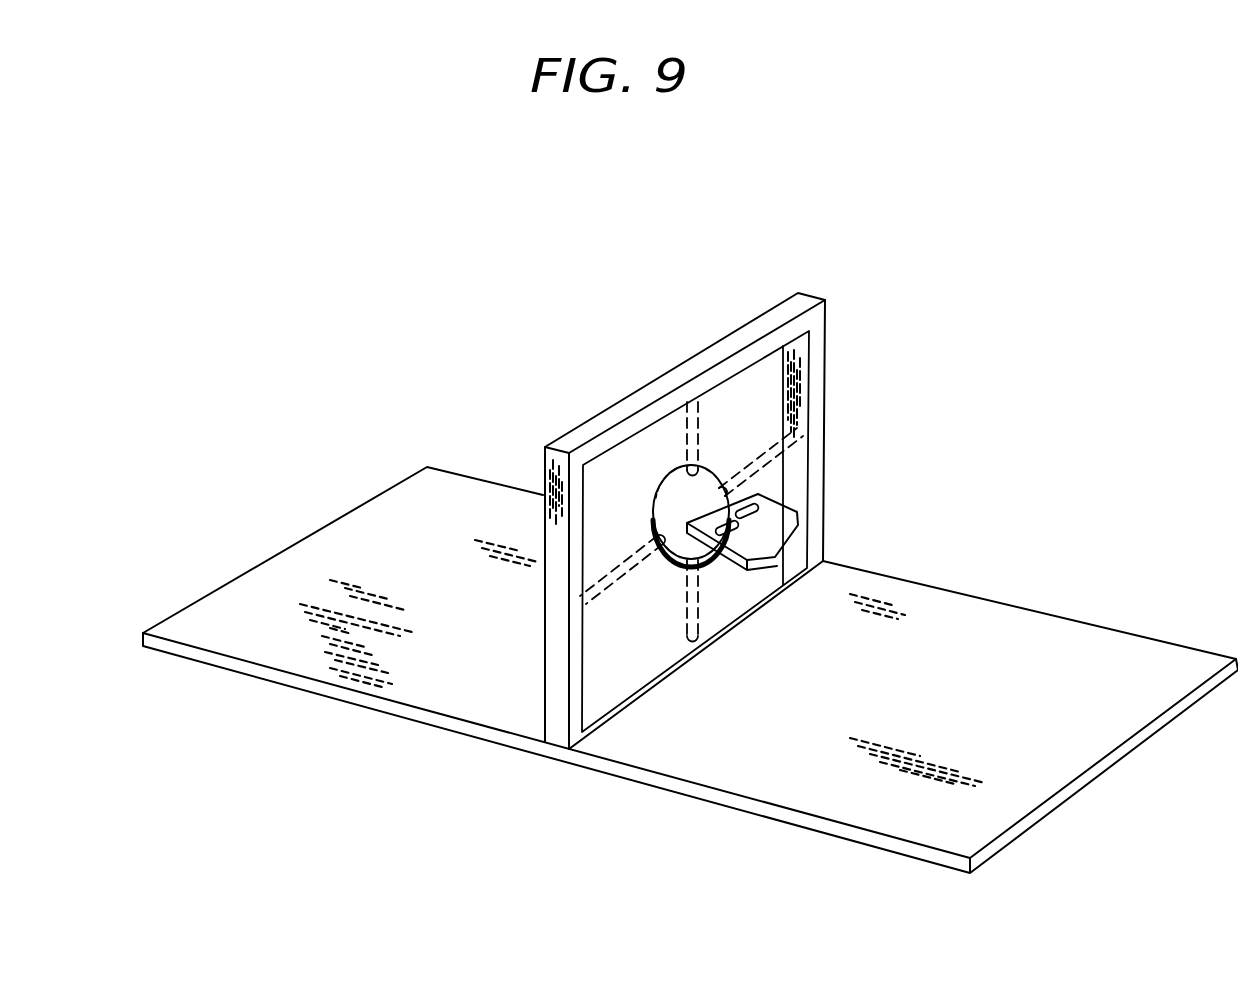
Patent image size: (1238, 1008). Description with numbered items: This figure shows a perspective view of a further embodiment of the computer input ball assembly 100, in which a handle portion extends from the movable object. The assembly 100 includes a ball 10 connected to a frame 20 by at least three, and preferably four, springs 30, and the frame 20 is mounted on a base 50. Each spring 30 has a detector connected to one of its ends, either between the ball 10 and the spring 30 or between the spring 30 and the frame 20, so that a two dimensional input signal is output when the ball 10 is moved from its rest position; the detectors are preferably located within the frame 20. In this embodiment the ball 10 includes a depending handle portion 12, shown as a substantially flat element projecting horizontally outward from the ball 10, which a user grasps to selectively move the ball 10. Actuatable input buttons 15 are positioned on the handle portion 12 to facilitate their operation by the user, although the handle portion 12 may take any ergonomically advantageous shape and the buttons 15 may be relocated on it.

The computer input ball assembly 100 is at (950, 290).
The base 50 is at (1060, 648).
The frame 20 is at (788, 304).
The ball 10 is at (665, 503).
The springs 30 is at (695, 437).
The handle portion 12 is at (755, 543).
The actuatable input buttons 15 is at (762, 496).